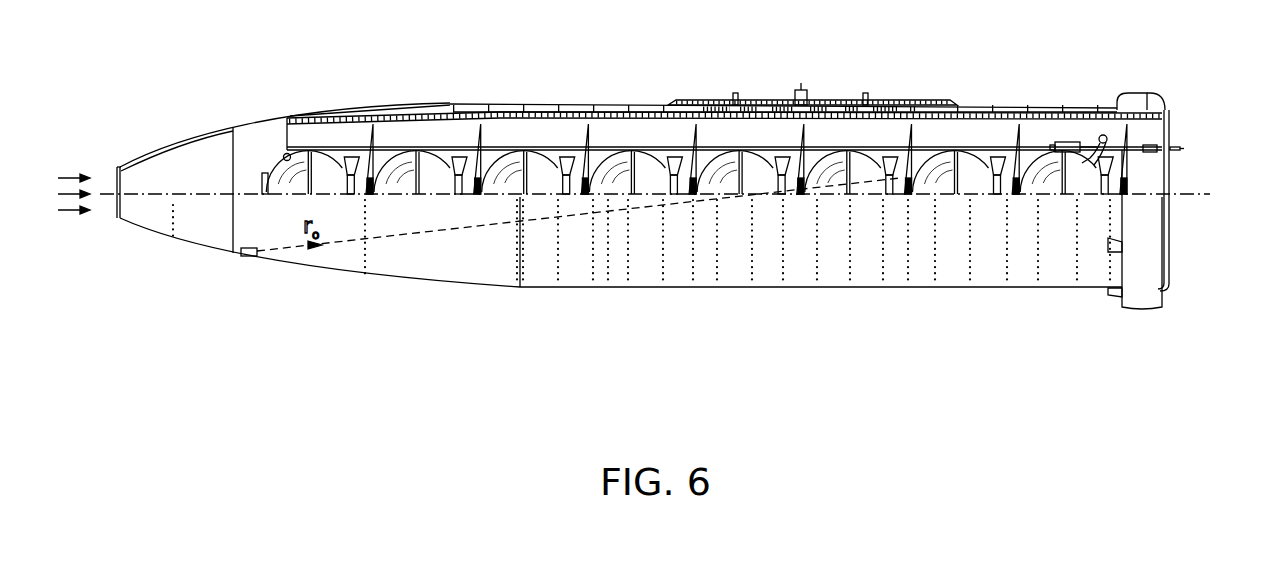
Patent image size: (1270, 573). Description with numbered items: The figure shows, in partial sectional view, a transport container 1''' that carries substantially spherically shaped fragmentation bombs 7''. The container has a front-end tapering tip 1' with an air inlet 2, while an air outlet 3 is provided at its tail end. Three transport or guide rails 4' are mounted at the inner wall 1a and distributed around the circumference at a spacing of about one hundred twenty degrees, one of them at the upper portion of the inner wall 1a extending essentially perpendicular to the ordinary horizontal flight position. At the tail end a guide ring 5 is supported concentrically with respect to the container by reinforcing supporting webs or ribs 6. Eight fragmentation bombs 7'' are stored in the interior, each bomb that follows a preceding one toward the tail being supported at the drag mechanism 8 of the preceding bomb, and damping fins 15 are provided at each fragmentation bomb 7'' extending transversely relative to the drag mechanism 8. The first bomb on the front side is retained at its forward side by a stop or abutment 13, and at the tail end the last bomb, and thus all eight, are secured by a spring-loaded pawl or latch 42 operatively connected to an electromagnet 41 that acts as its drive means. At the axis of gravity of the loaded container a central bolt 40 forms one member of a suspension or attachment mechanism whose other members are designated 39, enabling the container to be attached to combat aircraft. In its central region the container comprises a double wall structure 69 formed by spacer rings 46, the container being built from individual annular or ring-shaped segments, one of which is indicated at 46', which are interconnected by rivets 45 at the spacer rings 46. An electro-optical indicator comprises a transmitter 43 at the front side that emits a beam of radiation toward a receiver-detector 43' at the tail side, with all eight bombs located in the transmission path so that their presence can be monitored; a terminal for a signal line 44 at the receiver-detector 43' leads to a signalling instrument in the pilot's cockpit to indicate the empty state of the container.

The air inlet 2 is at (117, 178).
The front-end tapering tip 1' is at (96, 219).
The transport container 1''' is at (621, 281).
The fragmentation bomb 7'' is at (432, 126).
The stop or abutment 13 is at (285, 155).
The transport or guide rail 4' is at (370, 93).
The damping fins 15 is at (457, 160).
The inner wall 1a is at (482, 112).
The double wall structure 69 is at (605, 114).
The drag mechanism 8 is at (480, 140).
The spacer ring 46 is at (785, 74).
The suspension or attachment mechanism 39 is at (735, 100).
The central bolt 40 is at (803, 92).
The electromagnet 41 is at (1060, 143).
The spring-loaded pawl or latch 42 is at (1097, 138).
The reinforcing supporting webs or ribs 6 is at (1124, 102).
The guide ring 5 is at (1160, 98).
The air outlet 3 is at (1152, 185).
The receiver-detector 43' is at (1191, 124).
The signal line 44 is at (1183, 148).
The transmitter 43 is at (231, 288).
The rivets 45 is at (173, 225).
The annular or ring-shaped segment 46' is at (607, 274).